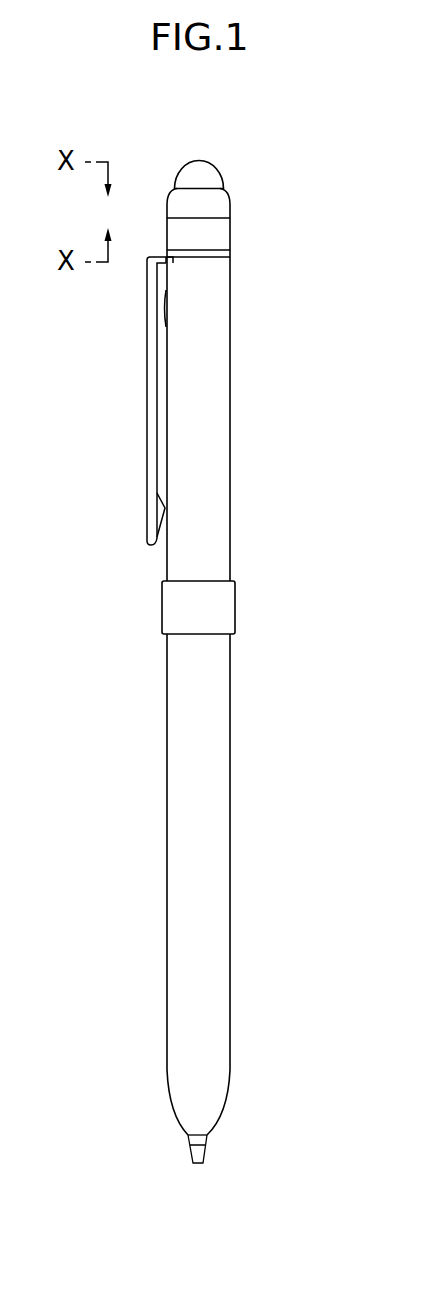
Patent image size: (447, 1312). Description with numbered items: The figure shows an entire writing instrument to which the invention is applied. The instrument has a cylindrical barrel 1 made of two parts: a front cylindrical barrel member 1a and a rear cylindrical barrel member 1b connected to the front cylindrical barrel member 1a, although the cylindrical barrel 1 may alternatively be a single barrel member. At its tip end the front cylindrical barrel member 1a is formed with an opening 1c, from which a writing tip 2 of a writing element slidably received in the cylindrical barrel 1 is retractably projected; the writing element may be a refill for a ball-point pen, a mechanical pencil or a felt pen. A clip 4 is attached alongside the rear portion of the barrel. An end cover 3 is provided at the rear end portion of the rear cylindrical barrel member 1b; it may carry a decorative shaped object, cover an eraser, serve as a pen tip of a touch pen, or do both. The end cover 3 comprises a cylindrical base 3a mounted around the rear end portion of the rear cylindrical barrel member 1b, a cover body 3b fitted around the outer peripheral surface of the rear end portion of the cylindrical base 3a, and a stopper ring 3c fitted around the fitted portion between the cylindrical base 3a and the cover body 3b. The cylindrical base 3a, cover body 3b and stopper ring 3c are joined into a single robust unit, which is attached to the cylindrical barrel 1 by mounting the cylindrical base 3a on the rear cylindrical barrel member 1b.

The cylindrical barrel 1 is at (244, 736).
The front cylindrical barrel member 1a is at (182, 783).
The rear cylindrical barrel member 1b is at (218, 433).
The opening 1c is at (208, 1143).
The writing tip 2 is at (190, 1152).
The end cover 3 is at (235, 178).
The cylindrical base 3a is at (222, 235).
The cover body 3b is at (198, 160).
The stopper ring 3c is at (223, 208).
The clip 4 is at (147, 392).